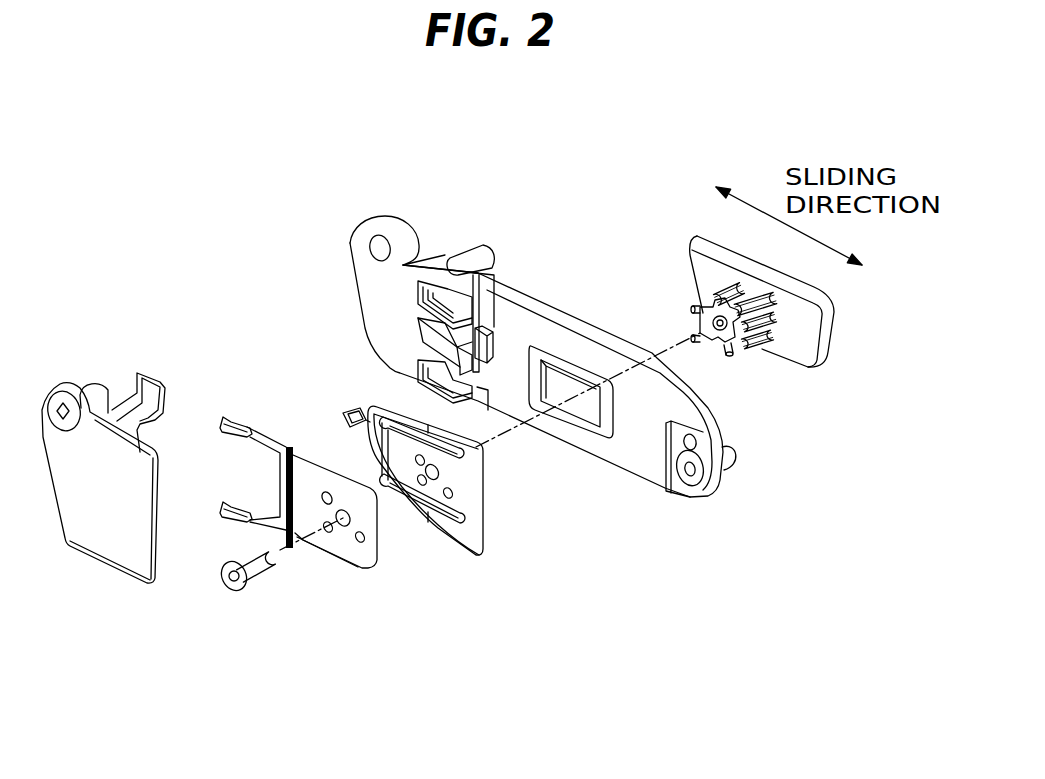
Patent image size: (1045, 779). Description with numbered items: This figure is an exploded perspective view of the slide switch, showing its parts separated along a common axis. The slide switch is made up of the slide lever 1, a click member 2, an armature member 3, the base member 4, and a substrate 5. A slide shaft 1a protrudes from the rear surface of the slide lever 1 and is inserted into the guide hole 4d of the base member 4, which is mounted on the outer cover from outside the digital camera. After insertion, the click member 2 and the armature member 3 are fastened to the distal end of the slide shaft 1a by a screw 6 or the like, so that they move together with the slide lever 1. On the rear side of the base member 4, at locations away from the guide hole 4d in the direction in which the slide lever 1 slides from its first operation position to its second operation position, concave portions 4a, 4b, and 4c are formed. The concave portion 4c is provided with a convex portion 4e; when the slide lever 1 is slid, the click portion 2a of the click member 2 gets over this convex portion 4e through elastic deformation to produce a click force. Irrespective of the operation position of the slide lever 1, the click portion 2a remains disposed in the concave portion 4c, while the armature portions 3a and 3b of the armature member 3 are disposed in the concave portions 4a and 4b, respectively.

The slide lever 1 is at (797, 353).
The slide shaft 1a is at (770, 350).
The click member 2 is at (467, 543).
The click portion 2a is at (347, 403).
The armature member 3 is at (350, 557).
The armature portion 3a is at (223, 420).
The armature portion 3b is at (223, 518).
The base member 4 is at (643, 468).
The concave portion 4a is at (447, 293).
The concave portion 4b is at (483, 382).
The concave portion 4c is at (463, 353).
The guide hole 4d is at (582, 420).
The convex portion 4e is at (483, 332).
The substrate 5 is at (127, 403).
The screw 6 is at (237, 593).